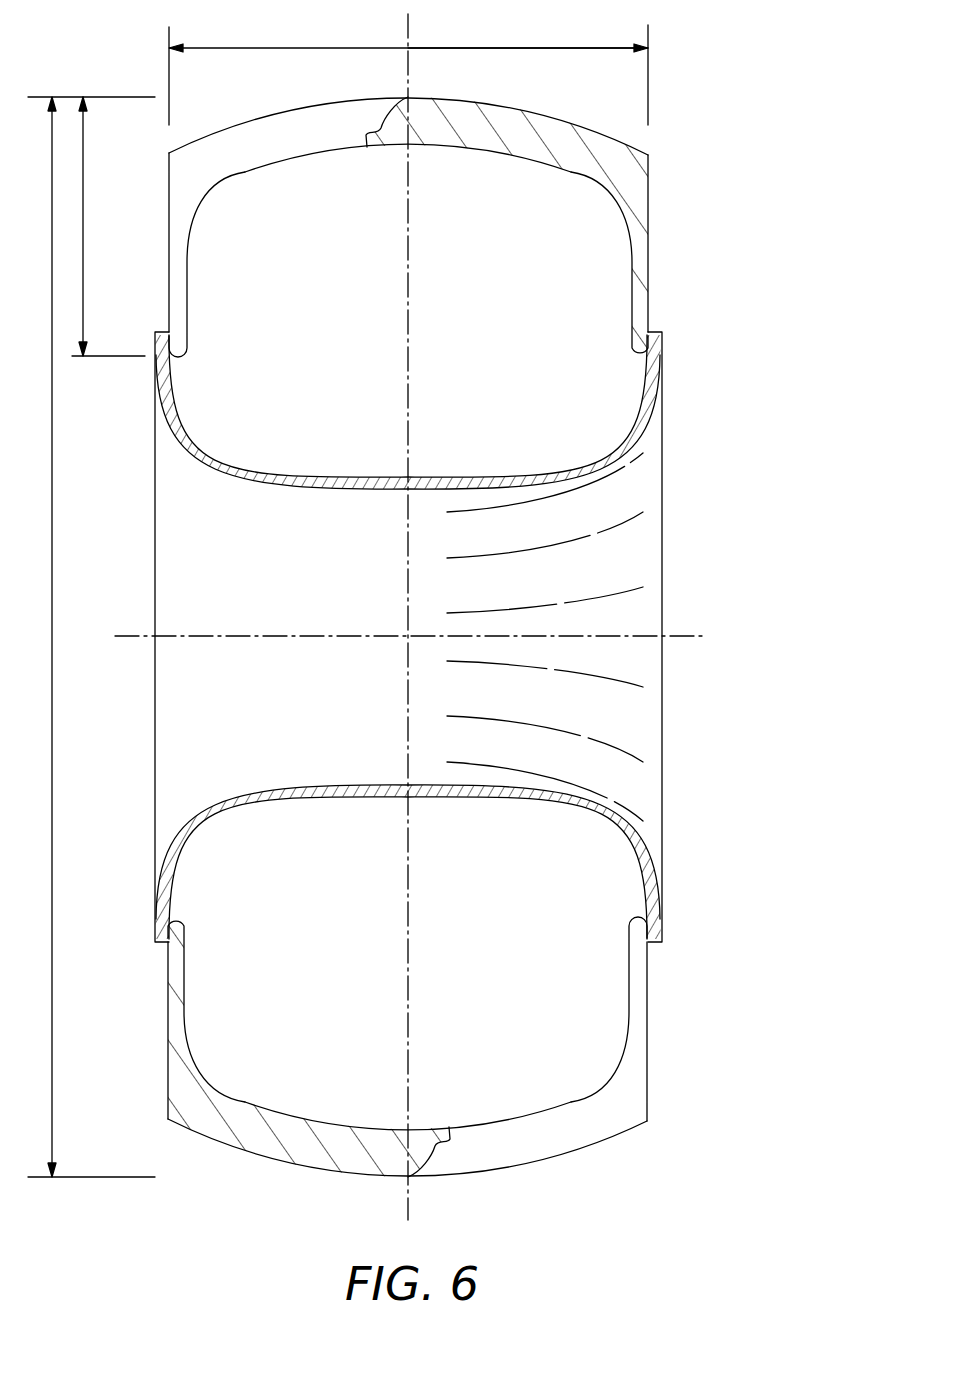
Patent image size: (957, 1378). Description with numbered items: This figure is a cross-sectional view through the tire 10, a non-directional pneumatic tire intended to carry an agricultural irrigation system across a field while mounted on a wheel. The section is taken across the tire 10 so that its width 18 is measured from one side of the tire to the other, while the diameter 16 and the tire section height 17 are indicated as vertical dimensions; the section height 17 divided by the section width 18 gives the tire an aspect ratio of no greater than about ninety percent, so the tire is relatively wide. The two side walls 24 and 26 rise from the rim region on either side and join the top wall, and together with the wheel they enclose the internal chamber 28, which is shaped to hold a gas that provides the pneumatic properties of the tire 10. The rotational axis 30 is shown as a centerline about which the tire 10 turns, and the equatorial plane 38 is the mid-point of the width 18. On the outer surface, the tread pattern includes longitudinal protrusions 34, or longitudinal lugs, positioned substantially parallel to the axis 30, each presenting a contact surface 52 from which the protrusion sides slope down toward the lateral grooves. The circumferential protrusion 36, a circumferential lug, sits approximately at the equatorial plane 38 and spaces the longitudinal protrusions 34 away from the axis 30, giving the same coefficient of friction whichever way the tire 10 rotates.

The tire 10 is at (708, 172).
The diameter 16 is at (56, 535).
The tire section height 17 is at (86, 160).
The width 18 is at (242, 47).
The side wall 24 is at (167, 237).
The side wall 26 is at (650, 258).
The internal chamber 28 is at (492, 313).
The rotational axis 30 is at (686, 637).
The longitudinal protrusion 34 is at (267, 133).
The circumferential protrusion 36 is at (377, 130).
The equatorial plane 38 is at (409, 23).
The contact surface 52 is at (289, 106).